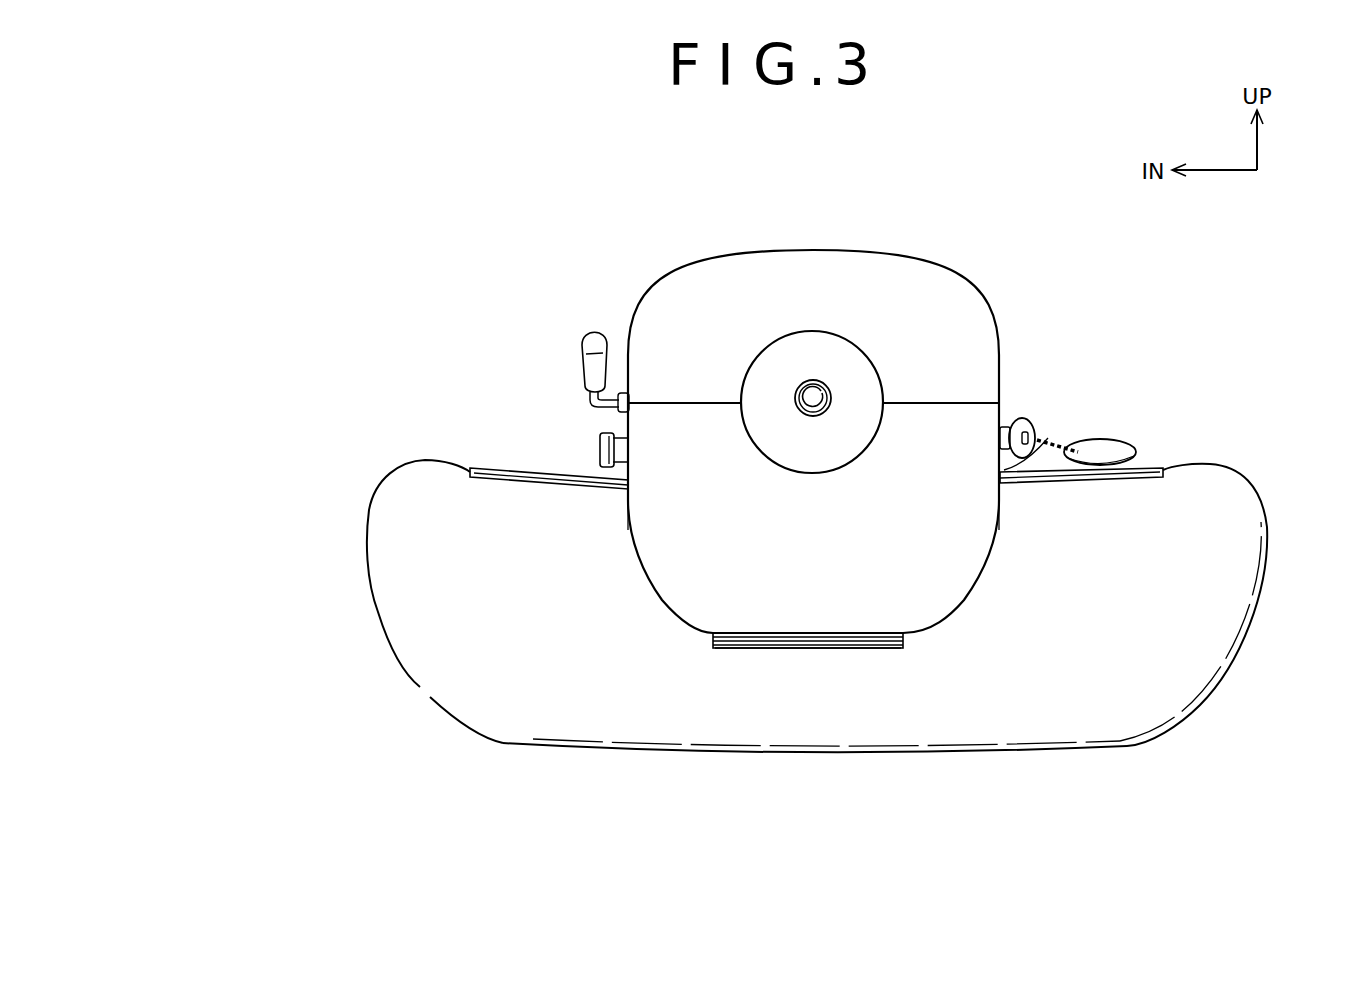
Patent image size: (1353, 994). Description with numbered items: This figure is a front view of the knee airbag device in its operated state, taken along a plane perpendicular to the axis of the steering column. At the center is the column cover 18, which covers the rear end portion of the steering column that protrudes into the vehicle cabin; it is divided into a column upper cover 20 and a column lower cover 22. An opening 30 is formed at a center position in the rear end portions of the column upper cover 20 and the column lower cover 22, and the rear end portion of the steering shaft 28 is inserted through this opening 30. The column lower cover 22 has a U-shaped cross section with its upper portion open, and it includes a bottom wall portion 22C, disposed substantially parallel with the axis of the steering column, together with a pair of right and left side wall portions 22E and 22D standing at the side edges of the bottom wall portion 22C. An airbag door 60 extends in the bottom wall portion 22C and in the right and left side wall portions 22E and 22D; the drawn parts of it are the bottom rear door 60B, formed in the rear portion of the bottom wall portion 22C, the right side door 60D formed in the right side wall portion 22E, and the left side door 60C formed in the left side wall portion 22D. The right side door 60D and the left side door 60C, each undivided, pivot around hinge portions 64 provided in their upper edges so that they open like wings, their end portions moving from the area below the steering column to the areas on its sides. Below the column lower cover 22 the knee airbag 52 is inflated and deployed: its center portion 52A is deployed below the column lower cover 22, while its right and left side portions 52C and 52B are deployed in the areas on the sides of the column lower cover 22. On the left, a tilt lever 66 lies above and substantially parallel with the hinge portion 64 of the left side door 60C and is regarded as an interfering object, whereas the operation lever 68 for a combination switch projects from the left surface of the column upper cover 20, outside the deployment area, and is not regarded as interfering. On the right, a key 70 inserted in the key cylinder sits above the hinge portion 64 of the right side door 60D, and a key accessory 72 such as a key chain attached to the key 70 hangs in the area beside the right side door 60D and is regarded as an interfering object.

The column cover 18 is at (1027, 318).
The column upper cover 20 is at (930, 258).
The column lower cover 22 is at (934, 634).
The bottom wall portion 22C is at (838, 650).
The left side wall portion 22D is at (628, 505).
The right side wall portion 22E is at (999, 510).
The steering shaft 28 is at (830, 393).
The opening 30 is at (788, 347).
The knee airbag 52 is at (1031, 763).
The center portion 52A is at (792, 733).
The left side portion 52B is at (403, 637).
The right side portion 52C is at (1222, 645).
The airbag door 60 is at (858, 557).
The bottom rear door 60B is at (730, 650).
The left side door 60C is at (470, 467).
The right side door 60D is at (1168, 467).
The hinge portion 64 is at (602, 461).
The tilt lever 66 is at (600, 440).
The operation lever 68 is at (582, 353).
The key 70 is at (1029, 426).
The key accessory 72 is at (1122, 448).